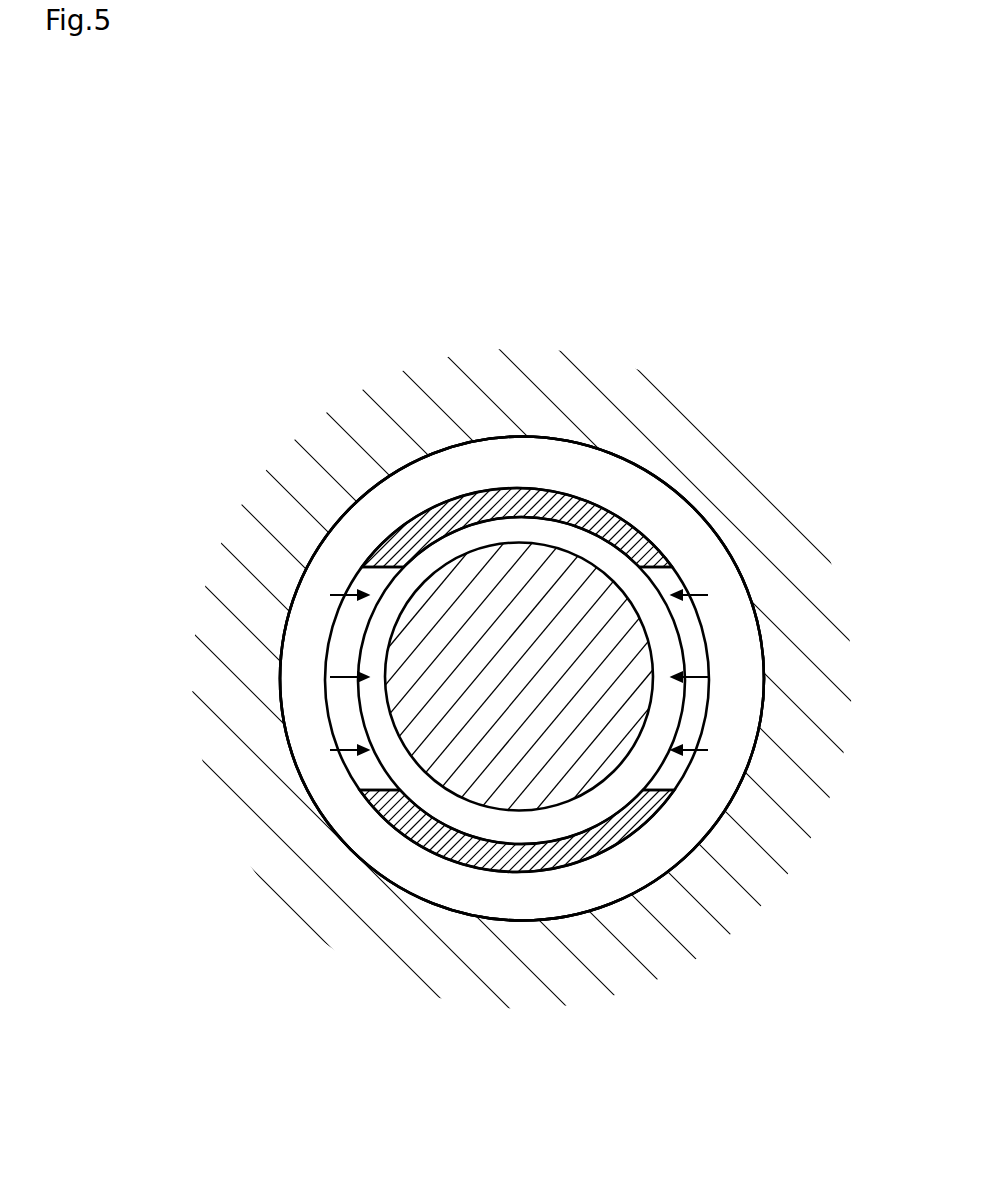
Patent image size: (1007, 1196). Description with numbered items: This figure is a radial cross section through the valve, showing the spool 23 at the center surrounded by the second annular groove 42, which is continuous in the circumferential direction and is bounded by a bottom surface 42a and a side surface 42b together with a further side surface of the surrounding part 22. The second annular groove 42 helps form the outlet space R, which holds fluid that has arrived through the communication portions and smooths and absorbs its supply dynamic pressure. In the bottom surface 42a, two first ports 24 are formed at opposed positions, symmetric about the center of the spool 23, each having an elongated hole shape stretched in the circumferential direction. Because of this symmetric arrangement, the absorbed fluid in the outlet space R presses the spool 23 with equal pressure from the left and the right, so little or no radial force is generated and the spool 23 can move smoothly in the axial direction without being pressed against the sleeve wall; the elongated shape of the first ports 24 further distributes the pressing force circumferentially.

The outer tube 22 is at (557, 900).
The spool 23 is at (489, 795).
The first ports 24 is at (372, 790).
The second annular groove 42 is at (622, 466).
The bottom surface 42a is at (437, 503).
The side surface 42b is at (335, 560).
The outlet space R is at (533, 908).